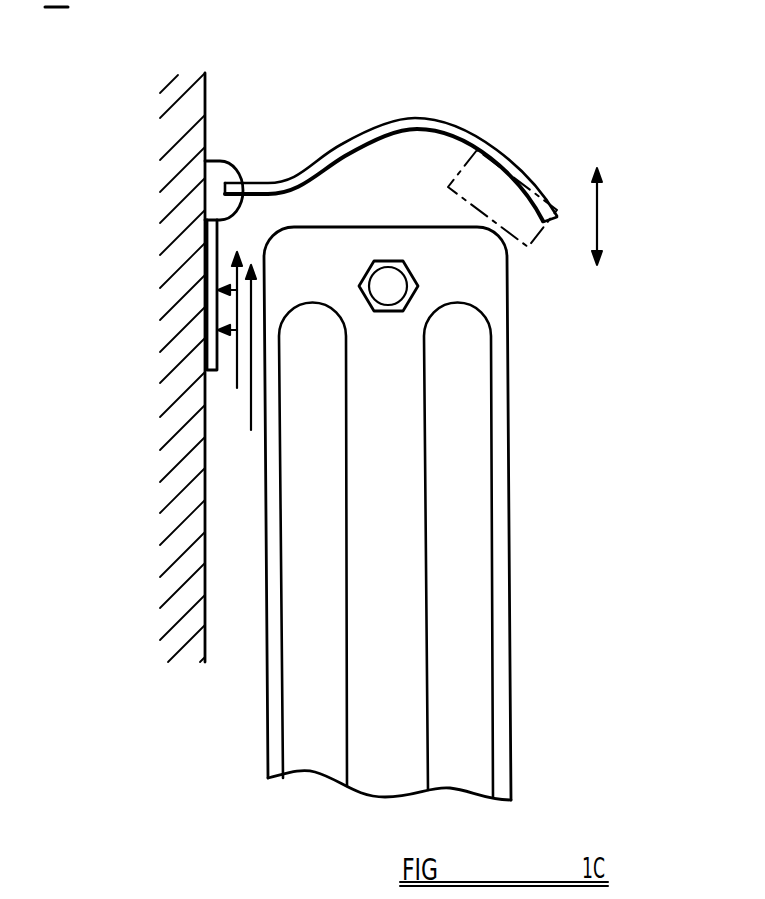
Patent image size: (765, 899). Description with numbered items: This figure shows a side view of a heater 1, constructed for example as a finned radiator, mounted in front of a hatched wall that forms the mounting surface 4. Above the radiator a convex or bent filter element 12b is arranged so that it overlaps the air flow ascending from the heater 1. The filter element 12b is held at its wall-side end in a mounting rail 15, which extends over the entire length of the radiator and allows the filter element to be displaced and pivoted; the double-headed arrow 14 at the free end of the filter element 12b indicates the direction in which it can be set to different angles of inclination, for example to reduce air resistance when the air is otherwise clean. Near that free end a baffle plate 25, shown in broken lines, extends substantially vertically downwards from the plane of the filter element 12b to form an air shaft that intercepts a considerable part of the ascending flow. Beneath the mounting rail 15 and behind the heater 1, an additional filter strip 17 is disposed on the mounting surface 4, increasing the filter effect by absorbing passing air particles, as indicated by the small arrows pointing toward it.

The heater 1 is at (473, 506).
The mounting surface 4 is at (178, 414).
The filter element 12b is at (478, 134).
The arrow 14 is at (599, 228).
The mounting rail 15 is at (228, 160).
The additional filter strip 17 is at (205, 292).
The baffle plate 25 is at (537, 233).